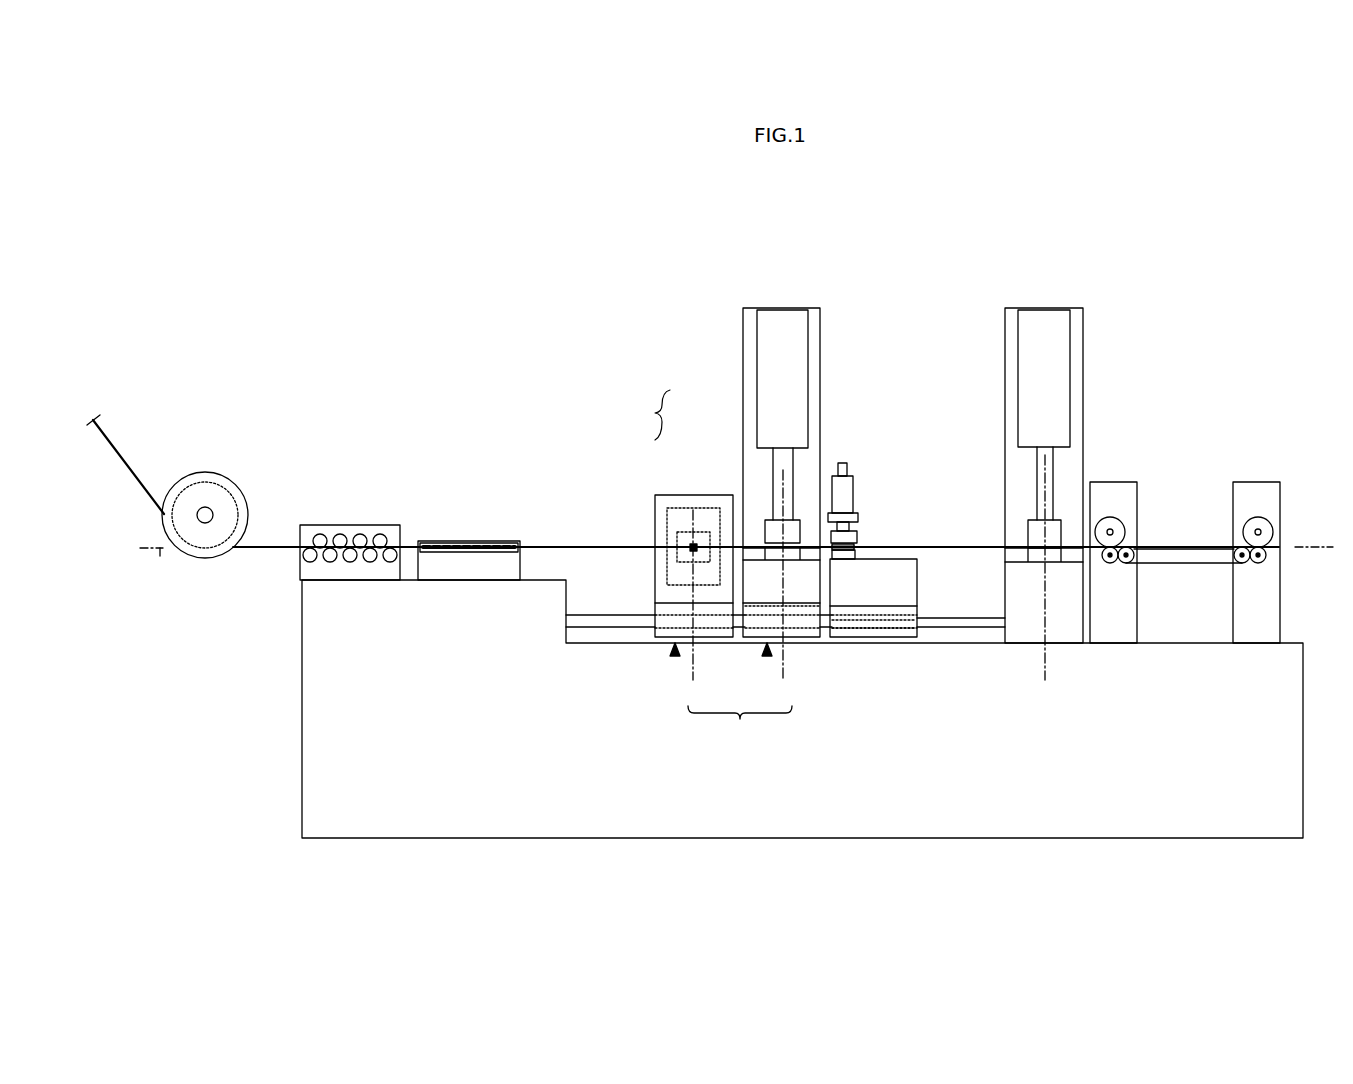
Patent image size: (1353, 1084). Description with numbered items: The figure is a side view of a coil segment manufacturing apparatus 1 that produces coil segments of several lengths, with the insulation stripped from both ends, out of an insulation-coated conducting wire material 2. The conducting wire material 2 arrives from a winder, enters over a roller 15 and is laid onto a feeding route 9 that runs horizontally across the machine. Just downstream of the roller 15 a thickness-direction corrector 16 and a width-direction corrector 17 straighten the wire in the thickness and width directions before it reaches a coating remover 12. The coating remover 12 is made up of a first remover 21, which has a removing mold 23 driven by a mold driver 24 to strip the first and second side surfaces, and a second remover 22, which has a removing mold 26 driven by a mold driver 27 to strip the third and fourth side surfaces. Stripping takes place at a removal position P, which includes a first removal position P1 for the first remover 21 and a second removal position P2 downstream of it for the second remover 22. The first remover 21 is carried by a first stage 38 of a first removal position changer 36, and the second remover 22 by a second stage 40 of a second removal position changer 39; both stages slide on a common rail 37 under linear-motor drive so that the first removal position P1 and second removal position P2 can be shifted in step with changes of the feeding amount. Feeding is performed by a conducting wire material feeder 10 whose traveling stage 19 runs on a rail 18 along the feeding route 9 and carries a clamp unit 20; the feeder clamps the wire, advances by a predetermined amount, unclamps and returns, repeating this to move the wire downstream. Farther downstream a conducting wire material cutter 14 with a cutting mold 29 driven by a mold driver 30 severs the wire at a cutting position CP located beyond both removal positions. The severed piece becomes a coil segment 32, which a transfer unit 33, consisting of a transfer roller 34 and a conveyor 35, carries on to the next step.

The coil segment manufacturing apparatus 1 is at (934, 252).
The conducting wire material 2 is at (122, 450).
The feeding route 9 is at (158, 560).
The roller 15 is at (226, 478).
The thickness-direction corrector 16 is at (348, 525).
The width-direction corrector 17 is at (465, 540).
The coil segment 32 is at (1157, 545).
The rail 37 is at (598, 615).
The first stage 38 is at (652, 632).
The coating remover 12 is at (647, 415).
The first remover 21 is at (678, 482).
The mold driver 24 is at (667, 518).
The removing mold 23 is at (680, 547).
The second remover 22 is at (730, 401).
The mold driver 27 is at (765, 352).
The removing mold 26 is at (793, 512).
The first removal position changer 36 is at (672, 652).
The second removal position changer 39 is at (765, 652).
The second stage 40 is at (803, 632).
The conducting wire material feeder 10 is at (866, 472).
The clamp unit 20 is at (858, 538).
The traveling stage 19 is at (888, 640).
The rail 18 is at (953, 616).
The conducting wire material cutter 14 is at (990, 346).
The mold driver 30 is at (1060, 408).
The cutting mold 29 is at (1005, 530).
The transfer unit 33 is at (1195, 468).
The transfer roller 34 is at (1122, 518).
The conveyor 35 is at (1173, 565).
The first removal position P1 is at (696, 696).
The second removal position P2 is at (784, 696).
The removal position P is at (740, 725).
The cutting position CP is at (1048, 692).